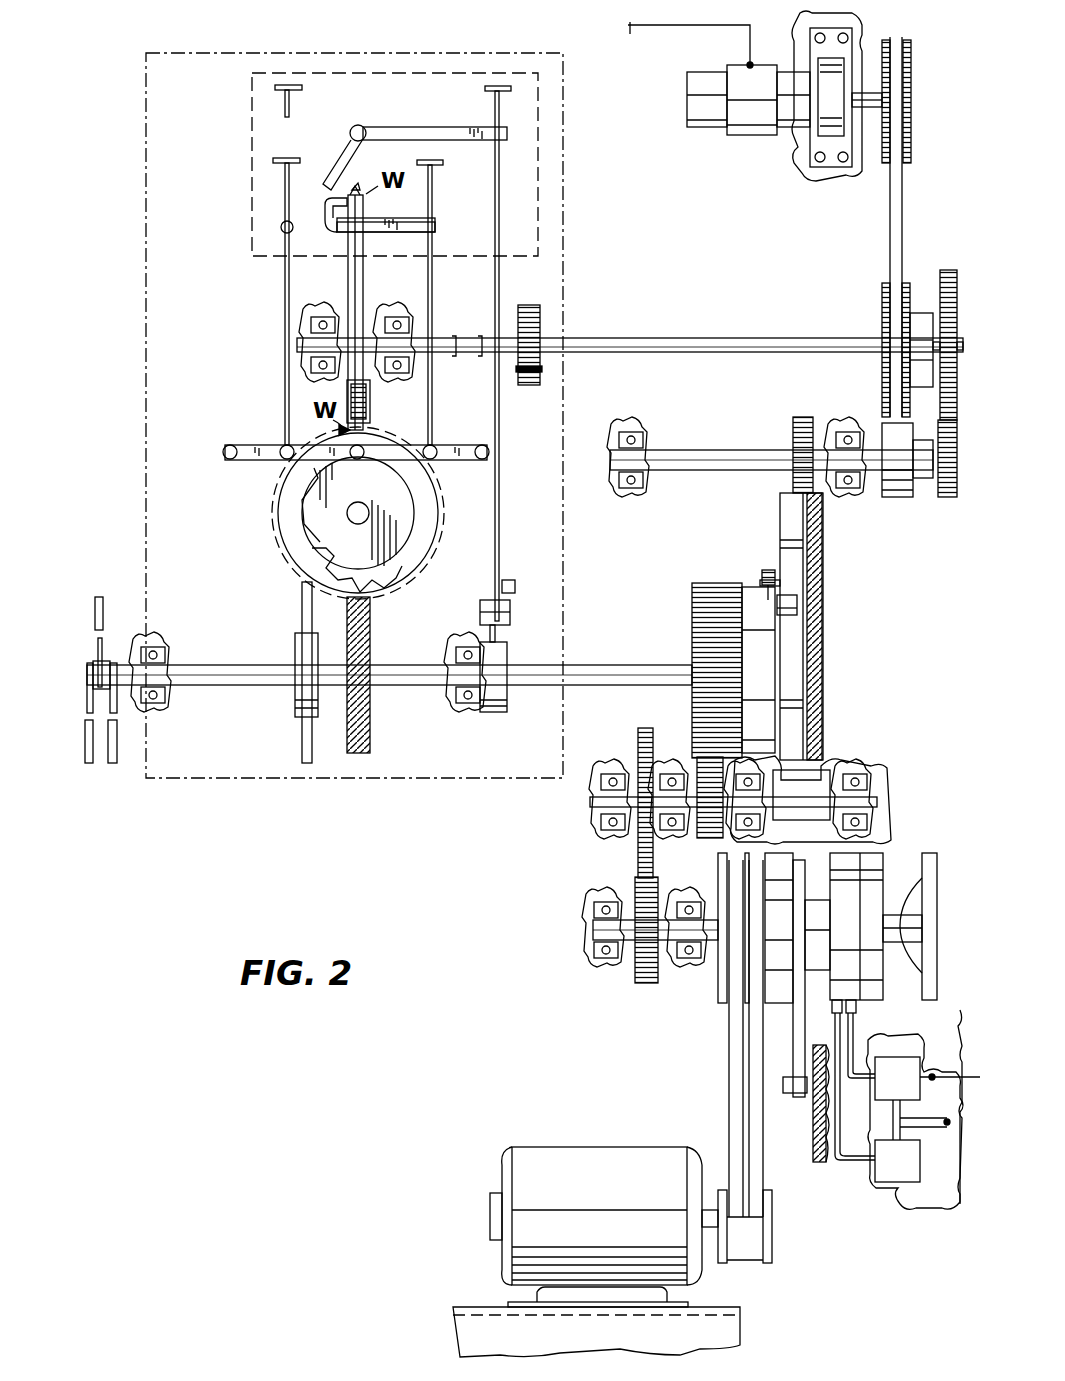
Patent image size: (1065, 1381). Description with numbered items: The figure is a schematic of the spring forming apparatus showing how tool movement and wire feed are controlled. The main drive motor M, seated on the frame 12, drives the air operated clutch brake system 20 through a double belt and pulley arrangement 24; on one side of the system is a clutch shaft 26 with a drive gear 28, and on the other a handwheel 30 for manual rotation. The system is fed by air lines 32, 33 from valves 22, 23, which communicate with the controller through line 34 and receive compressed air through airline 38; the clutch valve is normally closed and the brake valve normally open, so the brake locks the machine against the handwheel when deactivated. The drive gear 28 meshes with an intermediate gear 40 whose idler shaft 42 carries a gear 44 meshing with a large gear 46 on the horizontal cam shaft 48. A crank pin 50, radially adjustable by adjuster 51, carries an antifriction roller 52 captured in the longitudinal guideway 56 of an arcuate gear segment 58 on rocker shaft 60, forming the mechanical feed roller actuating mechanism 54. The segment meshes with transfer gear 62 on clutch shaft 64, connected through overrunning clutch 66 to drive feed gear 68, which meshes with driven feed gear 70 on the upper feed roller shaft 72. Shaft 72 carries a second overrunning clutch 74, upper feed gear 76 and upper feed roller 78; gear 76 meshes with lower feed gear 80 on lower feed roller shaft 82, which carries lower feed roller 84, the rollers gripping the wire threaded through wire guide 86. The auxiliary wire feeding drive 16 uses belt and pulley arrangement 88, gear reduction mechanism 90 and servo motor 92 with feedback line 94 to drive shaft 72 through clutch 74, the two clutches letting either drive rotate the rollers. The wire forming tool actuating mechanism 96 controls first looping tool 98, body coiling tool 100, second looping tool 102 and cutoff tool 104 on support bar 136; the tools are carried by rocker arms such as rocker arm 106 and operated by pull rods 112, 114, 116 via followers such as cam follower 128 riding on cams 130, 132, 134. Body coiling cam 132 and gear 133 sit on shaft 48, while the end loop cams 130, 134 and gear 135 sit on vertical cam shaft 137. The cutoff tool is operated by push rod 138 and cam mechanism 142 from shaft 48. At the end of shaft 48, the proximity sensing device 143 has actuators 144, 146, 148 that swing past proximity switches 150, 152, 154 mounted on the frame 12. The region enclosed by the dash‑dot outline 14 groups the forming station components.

The frame 12 is at (813, 1104).
The bagging station 14 is at (452, 70).
The auxiliary wire feeding drive 16 is at (875, 40).
The air operated clutch brake system 20 is at (868, 882).
The valve 22 is at (890, 1185).
The valve 23 is at (902, 1058).
The double belt and pulley arrangement 24 is at (740, 1046).
The clutch shaft 26 is at (592, 936).
The drive gear 28 is at (635, 975).
The handwheel 30 is at (930, 928).
The air line 32 is at (840, 1166).
The air line 33 is at (858, 1038).
The line 34 is at (958, 1042).
The airline 38 is at (952, 1192).
The intermediate gear 40 is at (640, 846).
The idler shaft 42 is at (595, 800).
The gear 44 is at (706, 838).
The large gear 46 is at (694, 620).
The horizontal cam shaft 48 is at (614, 666).
The crank pin 50 is at (764, 600).
The adjuster 51 is at (768, 578).
The antifriction roller 52 is at (800, 614).
The mechanical feed roller actuating mechanism 54 is at (863, 510).
The longitudinal guideway 56 is at (802, 680).
The arcuate gear segment 58 is at (815, 580).
The rocker shaft 60 is at (880, 794).
The transfer gear 62 is at (803, 417).
The clutch shaft 64 is at (676, 452).
The overrunning clutch 66 is at (900, 497).
The drive feed gear 68 is at (950, 497).
The driven feed gear 70 is at (950, 270).
The upper feed roller shaft 72 is at (742, 336).
The second overrunning clutch 74 is at (924, 302).
The upper feed gear 76 is at (528, 305).
The upper feed roller 78 is at (385, 304).
The lower feed gear 80 is at (528, 374).
The lower feed roller shaft 82 is at (468, 338).
The lower feed roller 84 is at (366, 400).
The wire guide 86 is at (352, 250).
The belt and pulley arrangement 88 is at (892, 210).
The gear reduction mechanism 90 is at (830, 62).
The servo motor 92 is at (702, 104).
The electrical line 94 is at (672, 30).
The wire forming tool actuating mechanism 96 is at (290, 530).
The first looping tool 98 is at (330, 210).
The body coiling tool 100 is at (360, 186).
The second looping tool 102 is at (405, 212).
The cutoff tool 104 is at (338, 160).
The rocker arm 106 is at (410, 232).
The pull rod 112 is at (434, 180).
The pull rod 114 is at (283, 100).
The pull rod 116 is at (282, 187).
The cam follower 128 is at (345, 460).
The first end loop cam 130 is at (300, 494).
The body coiling cam 132 is at (302, 740).
The gear 133 is at (370, 720).
The second end loop cam 134 is at (405, 512).
The gear 135 is at (405, 556).
The support bar 136 is at (386, 124).
The vertical cam shaft 137 is at (350, 522).
The push rod 138 is at (500, 85).
The cam mechanism 142 is at (528, 578).
The proximity sensing device 143 is at (67, 738).
The proximity switch actuator 144 is at (87, 690).
The proximity switch actuator 146 is at (97, 655).
The proximity switch actuator 148 is at (118, 712).
The proximity switch 150 is at (88, 760).
The proximity switch 152 is at (98, 597).
The proximity switch 154 is at (113, 765).
The main drive motor M is at (540, 1160).